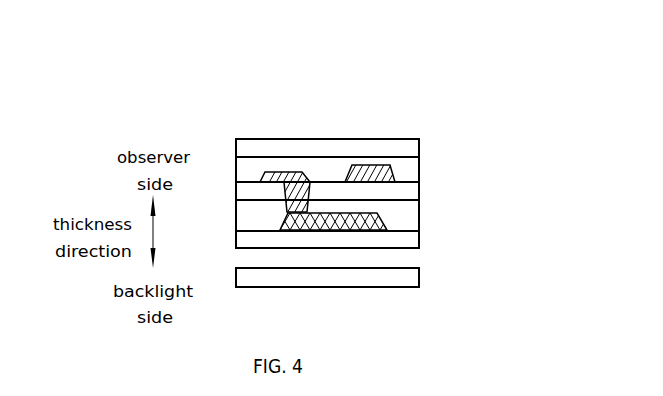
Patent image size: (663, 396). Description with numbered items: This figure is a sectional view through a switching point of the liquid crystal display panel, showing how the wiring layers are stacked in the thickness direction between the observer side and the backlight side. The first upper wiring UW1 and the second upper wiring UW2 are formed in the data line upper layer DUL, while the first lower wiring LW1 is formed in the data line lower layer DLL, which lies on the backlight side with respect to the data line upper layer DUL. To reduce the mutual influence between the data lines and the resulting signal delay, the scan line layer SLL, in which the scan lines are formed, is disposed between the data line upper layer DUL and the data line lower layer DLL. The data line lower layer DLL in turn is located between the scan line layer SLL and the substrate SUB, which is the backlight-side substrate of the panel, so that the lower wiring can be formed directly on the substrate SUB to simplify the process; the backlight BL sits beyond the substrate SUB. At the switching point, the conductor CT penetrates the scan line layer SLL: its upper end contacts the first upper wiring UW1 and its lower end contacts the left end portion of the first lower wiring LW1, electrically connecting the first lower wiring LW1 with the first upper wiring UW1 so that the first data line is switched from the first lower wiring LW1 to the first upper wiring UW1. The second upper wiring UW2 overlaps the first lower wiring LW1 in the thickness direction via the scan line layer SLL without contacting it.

The conductor CT is at (348, 151).
The first upper wiring UW1 is at (322, 171).
The second upper wiring UW2 is at (356, 170).
The first lower wiring LW1 is at (296, 273).
The data line upper layer DUL is at (382, 157).
The scan line layer SLL is at (382, 184).
The data line lower layer DLL is at (382, 213).
The substrate SUB is at (386, 233).
The backlight BL is at (380, 272).